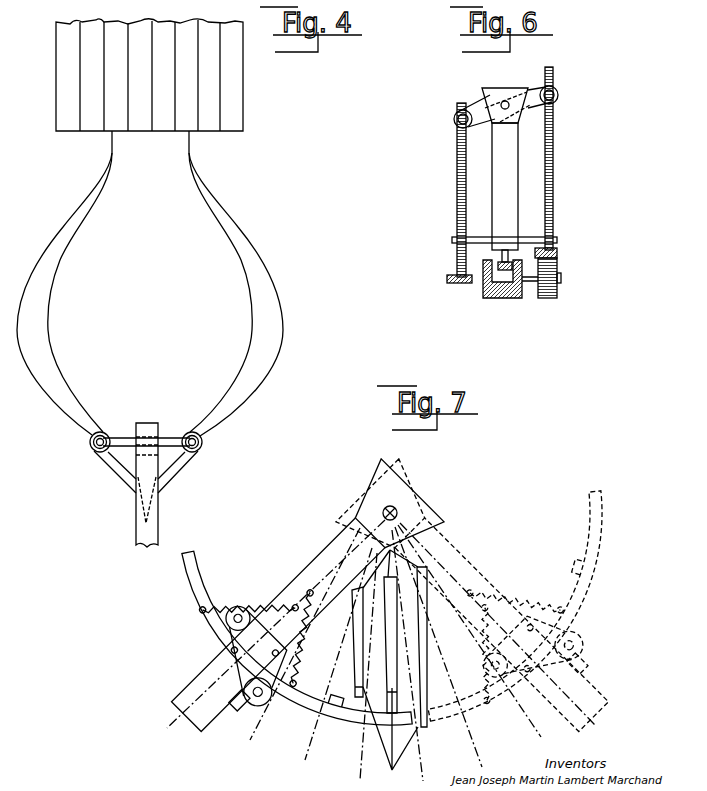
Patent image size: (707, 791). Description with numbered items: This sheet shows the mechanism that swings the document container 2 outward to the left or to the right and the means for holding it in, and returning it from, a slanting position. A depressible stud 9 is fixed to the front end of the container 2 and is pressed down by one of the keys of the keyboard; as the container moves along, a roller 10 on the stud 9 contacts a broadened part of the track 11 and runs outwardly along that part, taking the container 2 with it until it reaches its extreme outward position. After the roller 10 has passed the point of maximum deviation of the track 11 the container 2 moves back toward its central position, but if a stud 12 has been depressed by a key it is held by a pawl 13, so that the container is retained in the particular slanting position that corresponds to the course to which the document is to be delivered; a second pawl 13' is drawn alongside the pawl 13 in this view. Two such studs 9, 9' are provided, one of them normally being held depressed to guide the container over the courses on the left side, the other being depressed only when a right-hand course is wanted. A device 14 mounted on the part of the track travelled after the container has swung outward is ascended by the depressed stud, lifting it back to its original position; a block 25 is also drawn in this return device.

In FIG. 6, the container 2 is at (502, 177).
In FIG. 7, the container 2 is at (317, 568).
In FIG. 6, the stud 9 is at (451, 190).
In FIG. 6, the stud 9' is at (559, 158).
In FIG. 6, the roller 10 is at (458, 287).
In FIG. 4, the track 11 is at (52, 377).
In FIG. 7, the stud 12 is at (416, 780).
In FIG. 7, the pawl 13 is at (406, 632).
In FIG. 7, the sector pawl 13' is at (378, 646).
In FIG. 6, the device 14 is at (553, 297).
In FIG. 6, the block 25 is at (492, 300).